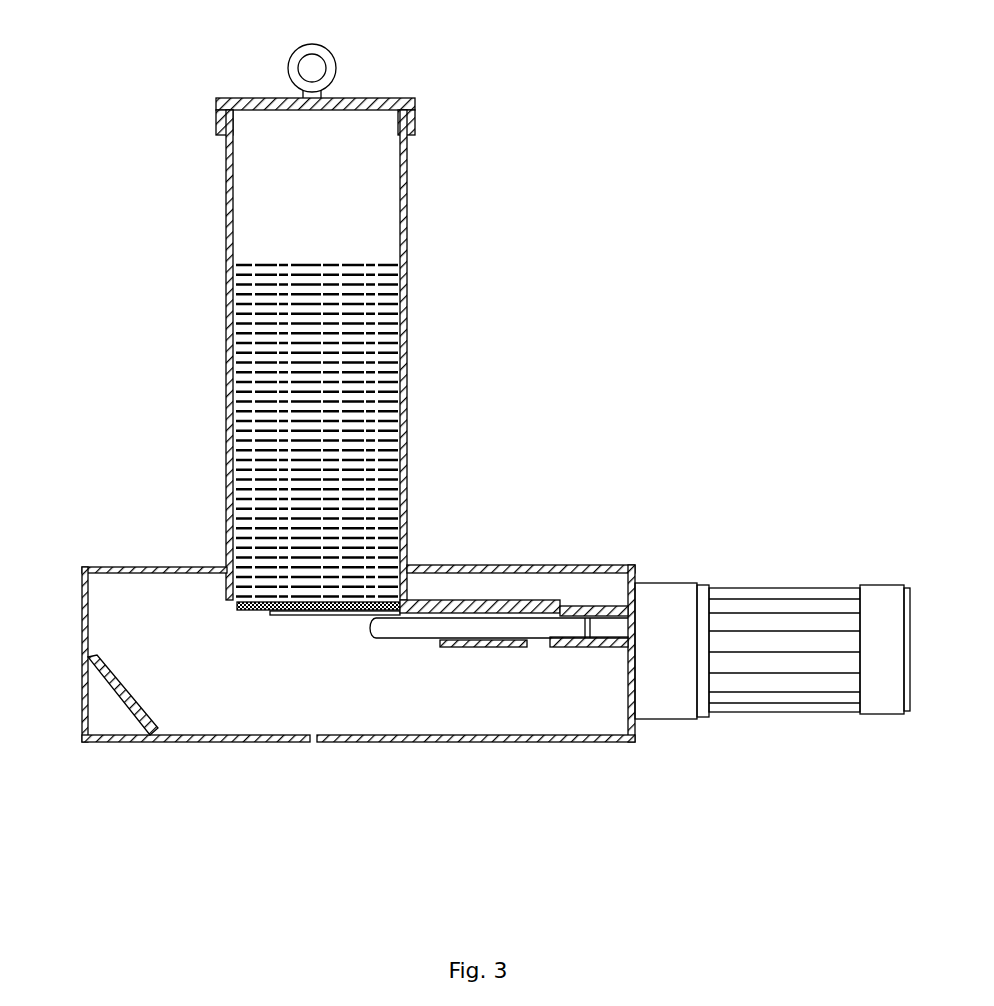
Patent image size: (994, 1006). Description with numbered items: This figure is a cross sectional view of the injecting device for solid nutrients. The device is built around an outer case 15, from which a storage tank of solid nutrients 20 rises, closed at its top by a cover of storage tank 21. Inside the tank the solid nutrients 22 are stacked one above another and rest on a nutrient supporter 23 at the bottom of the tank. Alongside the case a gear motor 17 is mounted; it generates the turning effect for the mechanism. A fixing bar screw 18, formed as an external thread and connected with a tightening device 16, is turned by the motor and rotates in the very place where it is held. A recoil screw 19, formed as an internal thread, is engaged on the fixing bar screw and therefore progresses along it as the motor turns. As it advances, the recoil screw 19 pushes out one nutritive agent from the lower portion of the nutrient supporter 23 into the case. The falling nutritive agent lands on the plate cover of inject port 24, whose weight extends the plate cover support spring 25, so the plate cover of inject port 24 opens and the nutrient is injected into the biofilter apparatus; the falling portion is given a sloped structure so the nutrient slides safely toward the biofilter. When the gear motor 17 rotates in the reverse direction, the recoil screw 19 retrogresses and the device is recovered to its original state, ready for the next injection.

The outer case 15 is at (99, 566).
The tightening device 16 is at (590, 605).
The gear motor 17 is at (778, 586).
The fixing bar screw 18 is at (410, 640).
The recoil screw 19 is at (505, 599).
The storage tank of solid nutrients 20 is at (225, 215).
The cover of storage tank 21 is at (255, 97).
The solid nutrients 22 is at (386, 338).
The nutrient supporter 23 is at (335, 617).
The plate cover of inject port 24 is at (119, 707).
The plate cover support spring 25 is at (215, 743).